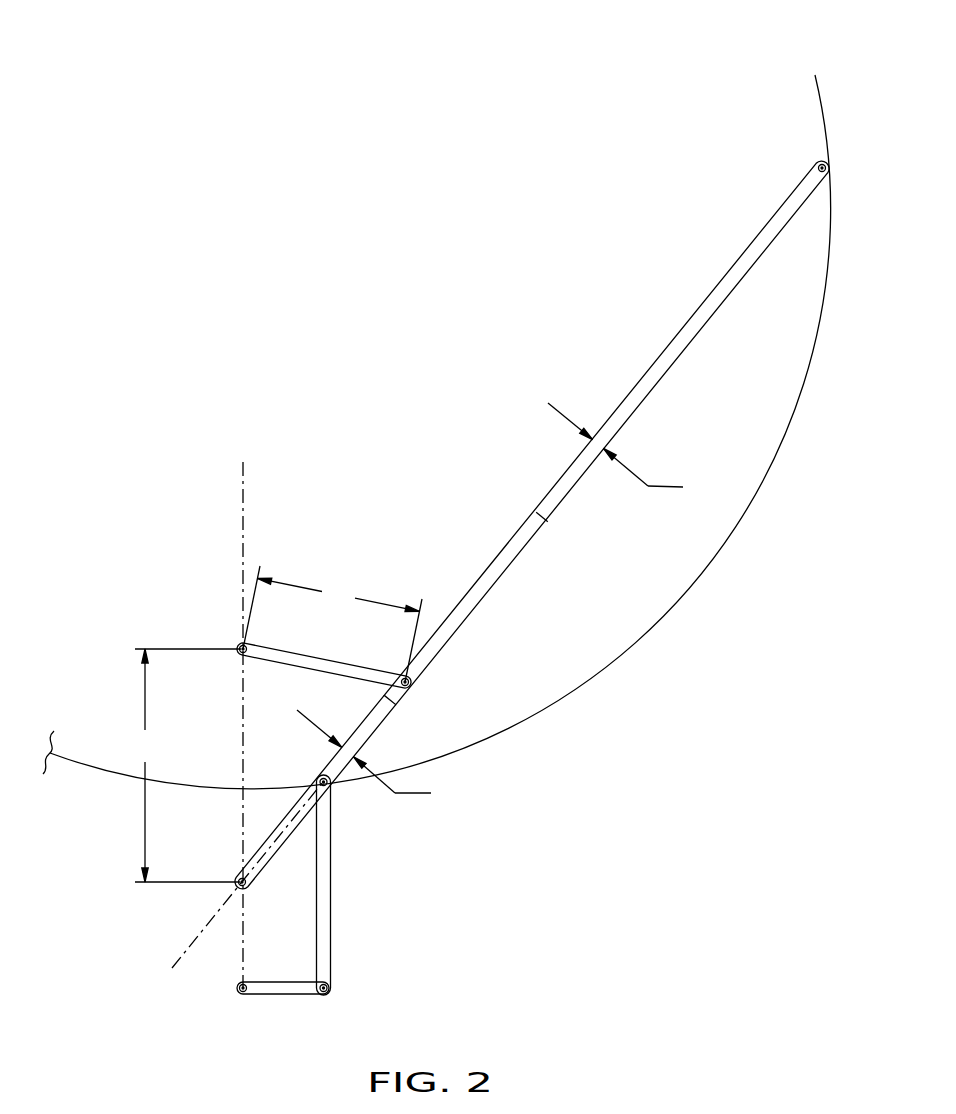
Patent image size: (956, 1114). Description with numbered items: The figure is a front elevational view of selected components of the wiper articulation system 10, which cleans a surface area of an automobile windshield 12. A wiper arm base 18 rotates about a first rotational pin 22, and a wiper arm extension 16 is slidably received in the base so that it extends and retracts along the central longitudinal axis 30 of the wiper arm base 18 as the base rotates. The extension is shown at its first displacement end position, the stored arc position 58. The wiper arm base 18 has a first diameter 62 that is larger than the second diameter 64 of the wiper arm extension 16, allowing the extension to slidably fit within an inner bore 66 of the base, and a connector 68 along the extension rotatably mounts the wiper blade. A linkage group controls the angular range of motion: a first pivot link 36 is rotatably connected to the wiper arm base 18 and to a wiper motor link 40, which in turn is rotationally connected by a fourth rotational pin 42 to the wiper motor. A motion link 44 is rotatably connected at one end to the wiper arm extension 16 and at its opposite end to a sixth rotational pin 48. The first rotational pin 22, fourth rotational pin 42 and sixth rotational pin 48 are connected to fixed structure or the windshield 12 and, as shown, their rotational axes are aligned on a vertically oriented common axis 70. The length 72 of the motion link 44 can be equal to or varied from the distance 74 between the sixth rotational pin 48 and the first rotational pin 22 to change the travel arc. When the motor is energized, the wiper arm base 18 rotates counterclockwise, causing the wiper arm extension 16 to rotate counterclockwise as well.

The wiper articulation system 10 is at (735, 77).
The windshield 12 is at (680, 572).
The wiper arm extension 16 is at (484, 592).
The wiper arm base 18 is at (373, 727).
The first rotational pin 22 is at (248, 888).
The central longitudinal axis 30 is at (167, 948).
The first pivot link 36 is at (328, 882).
The wiper motor link 40 is at (284, 996).
The fourth rotational pin 42 is at (241, 993).
The motion link 44 is at (325, 669).
The sixth rotational pin 48 is at (241, 647).
The stored arc position 58 is at (821, 165).
The first diameter 62 is at (381, 759).
The second diameter 64 is at (633, 453).
The inner bore 66 is at (400, 701).
The connector 68 is at (563, 483).
The common axis 70 is at (243, 491).
The length 72 is at (332, 624).
The distance 74 is at (186, 765).